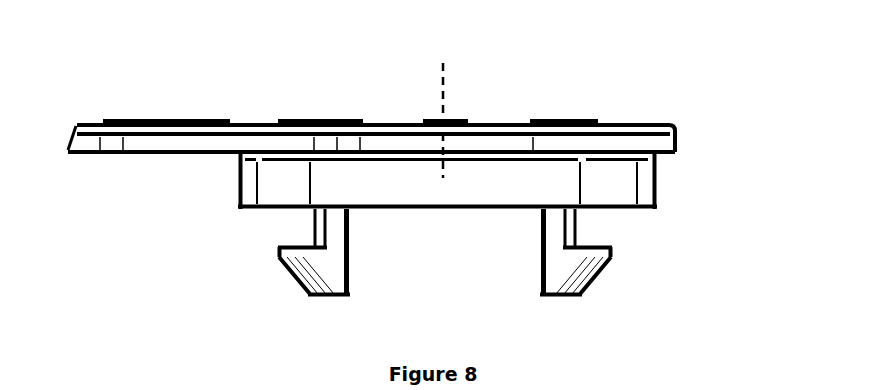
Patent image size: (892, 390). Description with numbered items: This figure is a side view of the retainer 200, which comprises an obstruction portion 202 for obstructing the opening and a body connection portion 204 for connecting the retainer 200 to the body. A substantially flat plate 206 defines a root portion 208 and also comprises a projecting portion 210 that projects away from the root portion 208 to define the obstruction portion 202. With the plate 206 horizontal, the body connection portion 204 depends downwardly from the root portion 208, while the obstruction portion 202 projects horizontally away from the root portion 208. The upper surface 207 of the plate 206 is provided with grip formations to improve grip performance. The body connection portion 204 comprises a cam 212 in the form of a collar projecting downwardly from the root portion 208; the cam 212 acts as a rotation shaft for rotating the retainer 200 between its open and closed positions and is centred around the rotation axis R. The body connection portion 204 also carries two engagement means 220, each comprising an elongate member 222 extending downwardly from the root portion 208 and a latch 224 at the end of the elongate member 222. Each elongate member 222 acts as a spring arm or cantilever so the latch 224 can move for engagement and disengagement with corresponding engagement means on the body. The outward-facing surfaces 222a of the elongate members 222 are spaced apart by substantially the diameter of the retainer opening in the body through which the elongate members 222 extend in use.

The retainer 200 is at (69, 99).
The obstruction portion 202 is at (147, 172).
The body connection portion 204 is at (610, 91).
The plate 206 is at (276, 124).
The upper surface 207 is at (380, 127).
The root portion 208 is at (490, 125).
The projecting portion 210 is at (161, 124).
The cam 212 is at (655, 187).
The engagement means 220 is at (445, 294).
The elongate member 222 is at (438, 252).
The outward-facing surfaces 222a is at (318, 225).
The latch 224 is at (577, 272).